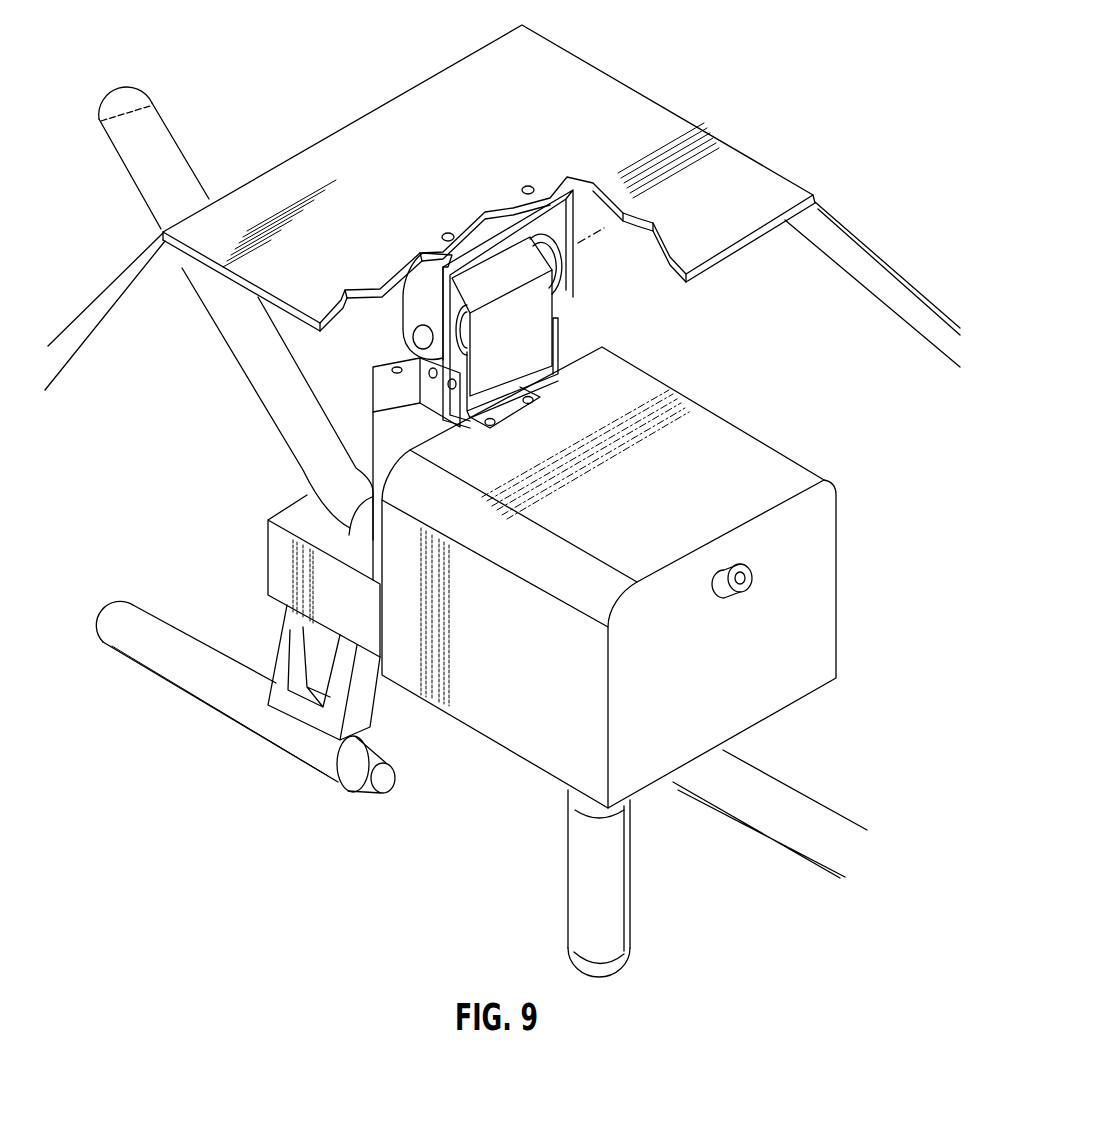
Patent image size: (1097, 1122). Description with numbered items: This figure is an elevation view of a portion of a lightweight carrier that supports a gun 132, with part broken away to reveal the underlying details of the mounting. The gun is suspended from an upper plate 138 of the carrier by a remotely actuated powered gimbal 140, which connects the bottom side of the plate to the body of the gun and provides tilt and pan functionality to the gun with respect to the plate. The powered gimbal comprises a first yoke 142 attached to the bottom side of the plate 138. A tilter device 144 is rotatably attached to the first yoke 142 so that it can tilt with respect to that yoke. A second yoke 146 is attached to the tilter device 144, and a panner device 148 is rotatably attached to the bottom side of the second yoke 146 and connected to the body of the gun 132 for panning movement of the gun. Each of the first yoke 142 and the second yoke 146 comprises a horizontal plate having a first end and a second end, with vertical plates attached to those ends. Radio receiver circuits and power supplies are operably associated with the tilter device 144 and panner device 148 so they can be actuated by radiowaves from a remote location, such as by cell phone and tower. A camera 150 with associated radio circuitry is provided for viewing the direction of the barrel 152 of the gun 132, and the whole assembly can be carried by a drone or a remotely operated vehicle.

The gun 132 is at (254, 746).
The upper plate 138 is at (571, 66).
The remotely actuated powered gimbal 140 is at (568, 300).
The first yoke 142 is at (393, 338).
The tilter device 144 is at (530, 345).
The second yoke 146 is at (440, 400).
The panner device 148 is at (383, 400).
The camera 150 is at (722, 590).
The barrel 152 is at (771, 828).